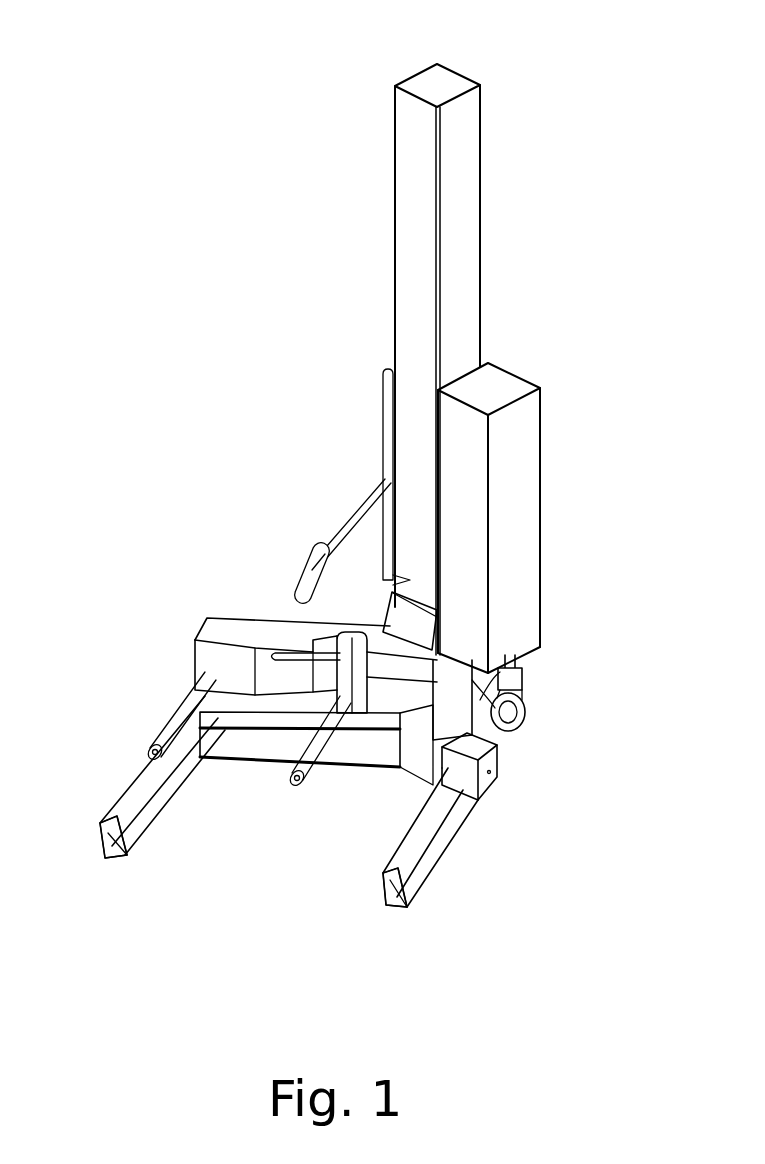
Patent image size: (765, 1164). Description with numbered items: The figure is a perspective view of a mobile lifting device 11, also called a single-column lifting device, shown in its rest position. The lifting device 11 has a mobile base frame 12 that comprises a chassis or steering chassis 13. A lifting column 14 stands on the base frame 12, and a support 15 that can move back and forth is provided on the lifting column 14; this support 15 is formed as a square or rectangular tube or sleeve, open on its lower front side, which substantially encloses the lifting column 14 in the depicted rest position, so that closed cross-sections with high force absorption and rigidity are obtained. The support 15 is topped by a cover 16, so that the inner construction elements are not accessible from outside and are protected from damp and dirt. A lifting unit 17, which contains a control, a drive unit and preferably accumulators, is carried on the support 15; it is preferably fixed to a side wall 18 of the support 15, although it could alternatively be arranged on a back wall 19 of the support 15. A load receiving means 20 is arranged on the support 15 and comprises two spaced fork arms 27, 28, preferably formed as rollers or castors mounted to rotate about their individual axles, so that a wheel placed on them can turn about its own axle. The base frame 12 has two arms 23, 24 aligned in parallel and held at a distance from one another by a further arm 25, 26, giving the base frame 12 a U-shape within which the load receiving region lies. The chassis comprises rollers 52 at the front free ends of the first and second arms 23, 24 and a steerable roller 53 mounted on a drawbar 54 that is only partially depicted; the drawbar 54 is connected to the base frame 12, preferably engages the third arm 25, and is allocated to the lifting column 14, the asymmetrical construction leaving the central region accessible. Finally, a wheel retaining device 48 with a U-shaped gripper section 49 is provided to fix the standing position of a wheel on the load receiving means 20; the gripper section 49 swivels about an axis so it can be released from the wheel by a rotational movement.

The lifting device 11 is at (316, 383).
The base frame 12 is at (522, 780).
The steering chassis 13 is at (507, 814).
The lifting column 14 is at (408, 788).
The support 15 is at (408, 210).
The cover 16 is at (437, 82).
The lifting unit 17 is at (528, 452).
The side wall 18 is at (465, 293).
The back wall 19 is at (503, 206).
The load receiving means 20 is at (222, 625).
The first arm 23 is at (130, 782).
The second arm 24 is at (428, 866).
The third arm 25 is at (497, 768).
The further arm 26 is at (233, 763).
The first fork arm 27 is at (207, 688).
The second fork arm 28 is at (288, 786).
The wheel retaining device 48 is at (341, 486).
The gripper section 49 is at (298, 571).
The rollers 52 is at (115, 843).
The steerable roller 53 is at (537, 712).
The drawbar 54 is at (547, 666).